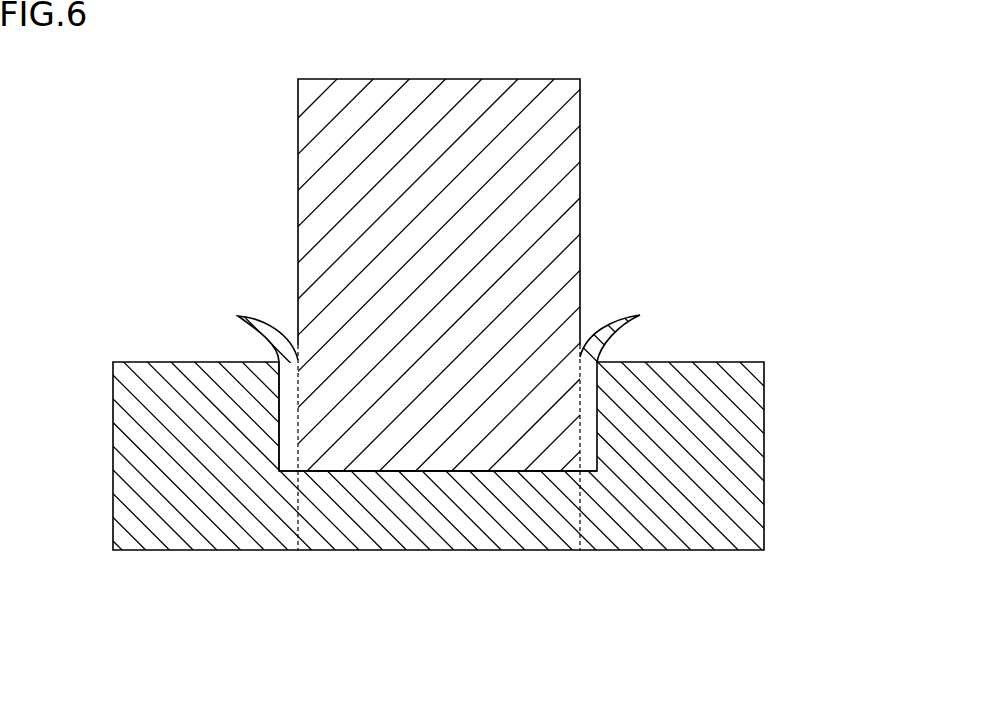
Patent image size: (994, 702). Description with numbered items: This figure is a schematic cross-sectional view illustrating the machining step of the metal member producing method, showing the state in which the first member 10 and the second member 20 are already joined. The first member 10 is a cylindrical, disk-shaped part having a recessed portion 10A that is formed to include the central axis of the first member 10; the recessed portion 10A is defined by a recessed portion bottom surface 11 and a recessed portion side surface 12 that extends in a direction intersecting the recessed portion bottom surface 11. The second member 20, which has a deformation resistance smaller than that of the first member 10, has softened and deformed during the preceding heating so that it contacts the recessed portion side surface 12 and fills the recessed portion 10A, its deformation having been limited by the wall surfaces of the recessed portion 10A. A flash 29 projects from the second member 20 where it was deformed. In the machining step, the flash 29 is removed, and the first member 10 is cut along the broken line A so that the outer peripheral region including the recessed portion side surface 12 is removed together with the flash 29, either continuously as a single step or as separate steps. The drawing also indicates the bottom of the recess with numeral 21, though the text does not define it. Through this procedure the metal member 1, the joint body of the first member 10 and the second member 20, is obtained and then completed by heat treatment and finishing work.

The metal member 1 is at (614, 89).
The first member 10 is at (737, 391).
The recessed portion 10A is at (272, 379).
The recessed portion bottom surface 11 is at (395, 467).
The recessed portion side surface 12 is at (325, 420).
The second member 20 is at (545, 190).
The bottom surface of recess 21 is at (457, 474).
The flash 29 is at (603, 335).
The broken line A is at (297, 518).